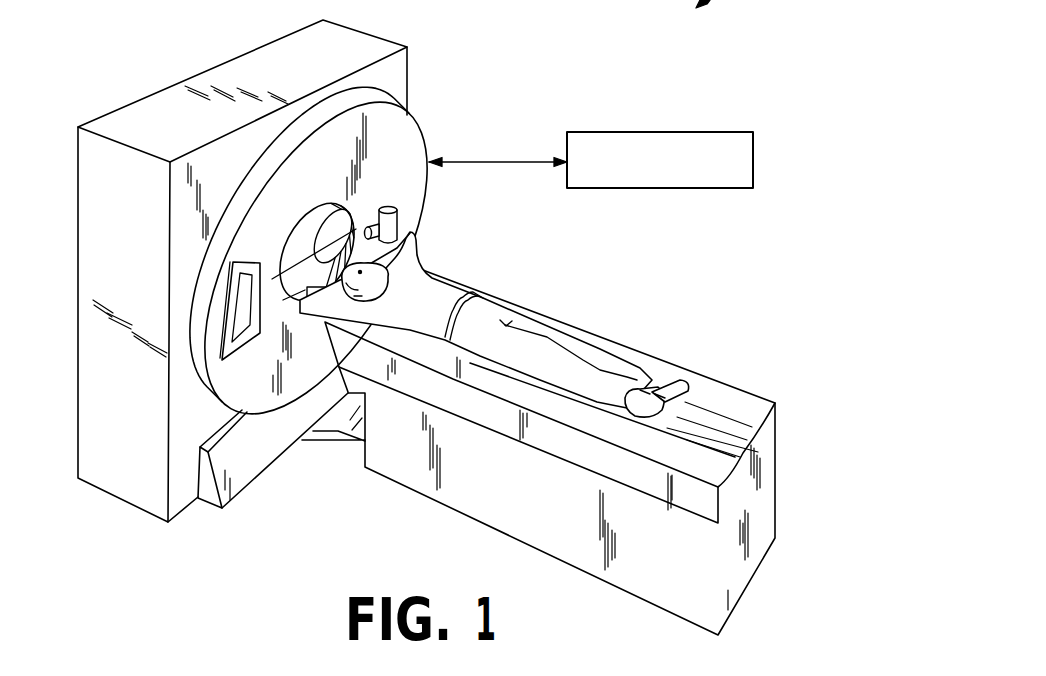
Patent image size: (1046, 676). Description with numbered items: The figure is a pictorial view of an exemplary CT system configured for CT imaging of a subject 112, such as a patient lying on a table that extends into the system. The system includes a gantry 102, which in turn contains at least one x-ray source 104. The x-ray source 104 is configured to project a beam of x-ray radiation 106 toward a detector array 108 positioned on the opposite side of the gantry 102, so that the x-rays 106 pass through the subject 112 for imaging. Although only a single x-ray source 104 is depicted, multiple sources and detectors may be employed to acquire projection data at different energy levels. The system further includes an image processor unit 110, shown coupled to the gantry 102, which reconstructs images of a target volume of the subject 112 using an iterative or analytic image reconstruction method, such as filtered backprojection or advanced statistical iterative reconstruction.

The gantry 102 is at (402, 165).
The x-ray source 104 is at (397, 224).
The beam of x-ray radiation 106 is at (290, 272).
The detector array 108 is at (245, 333).
The image processor unit 110 is at (712, 132).
The subject 112 is at (435, 288).